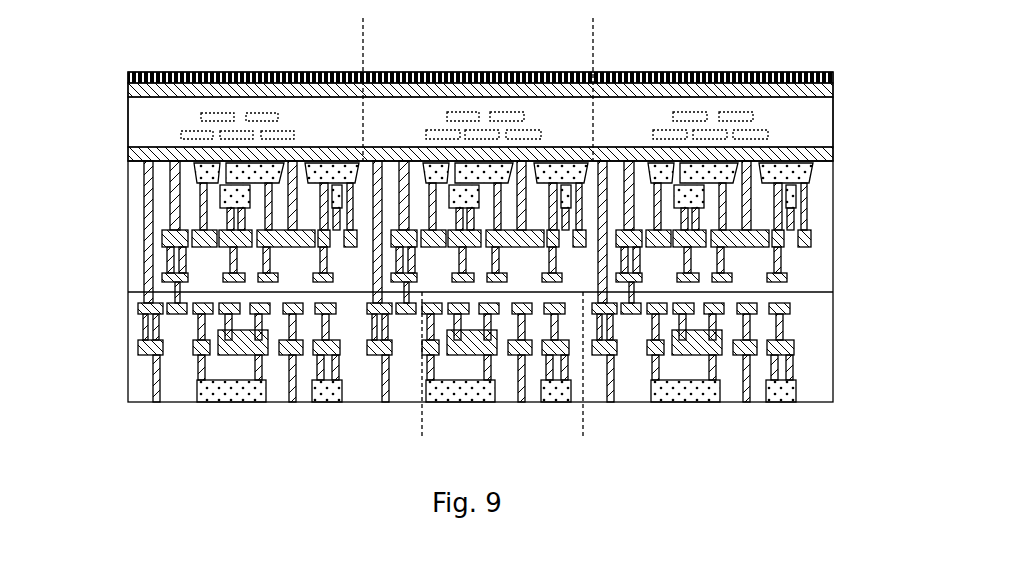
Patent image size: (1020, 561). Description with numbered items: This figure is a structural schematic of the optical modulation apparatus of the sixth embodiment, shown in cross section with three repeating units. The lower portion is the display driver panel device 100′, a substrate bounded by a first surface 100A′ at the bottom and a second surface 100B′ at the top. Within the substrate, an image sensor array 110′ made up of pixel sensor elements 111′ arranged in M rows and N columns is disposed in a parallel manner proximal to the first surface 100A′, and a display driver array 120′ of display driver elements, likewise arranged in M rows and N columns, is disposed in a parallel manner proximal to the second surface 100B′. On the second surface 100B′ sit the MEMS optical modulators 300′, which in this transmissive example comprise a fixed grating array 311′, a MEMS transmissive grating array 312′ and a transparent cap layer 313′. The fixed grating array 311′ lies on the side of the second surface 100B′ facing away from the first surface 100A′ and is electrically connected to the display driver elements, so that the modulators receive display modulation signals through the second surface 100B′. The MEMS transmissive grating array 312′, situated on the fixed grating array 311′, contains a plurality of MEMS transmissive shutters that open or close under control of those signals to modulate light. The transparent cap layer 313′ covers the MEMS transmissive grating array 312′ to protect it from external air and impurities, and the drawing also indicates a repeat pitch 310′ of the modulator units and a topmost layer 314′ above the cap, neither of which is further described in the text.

The display driver panel device 100′ is at (419, 281).
The first surface 100A′ is at (174, 409).
The second surface 100B′ is at (150, 140).
The image sensor array 110′ is at (433, 347).
The pixel sensor element 111′ is at (583, 420).
The display driver array 120′ is at (122, 161).
The MEMS optical modulators 300′ is at (492, 105).
The light emitting unit width 310′ is at (593, 45).
The fixed grating array 311′ is at (832, 157).
The MEMS transmissive grating array 312′ is at (824, 123).
The transparent cap layer 313′ is at (832, 89).
The encapsulation layer 314′ is at (832, 77).